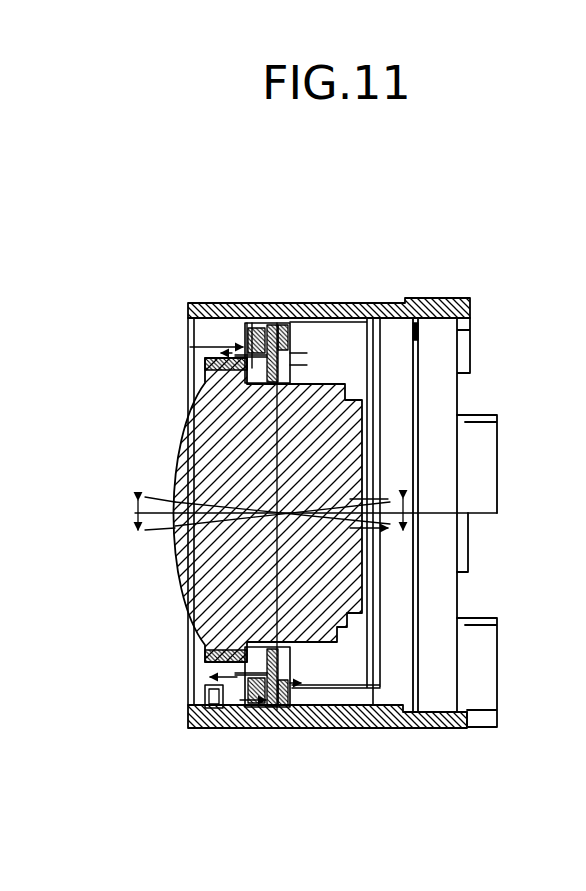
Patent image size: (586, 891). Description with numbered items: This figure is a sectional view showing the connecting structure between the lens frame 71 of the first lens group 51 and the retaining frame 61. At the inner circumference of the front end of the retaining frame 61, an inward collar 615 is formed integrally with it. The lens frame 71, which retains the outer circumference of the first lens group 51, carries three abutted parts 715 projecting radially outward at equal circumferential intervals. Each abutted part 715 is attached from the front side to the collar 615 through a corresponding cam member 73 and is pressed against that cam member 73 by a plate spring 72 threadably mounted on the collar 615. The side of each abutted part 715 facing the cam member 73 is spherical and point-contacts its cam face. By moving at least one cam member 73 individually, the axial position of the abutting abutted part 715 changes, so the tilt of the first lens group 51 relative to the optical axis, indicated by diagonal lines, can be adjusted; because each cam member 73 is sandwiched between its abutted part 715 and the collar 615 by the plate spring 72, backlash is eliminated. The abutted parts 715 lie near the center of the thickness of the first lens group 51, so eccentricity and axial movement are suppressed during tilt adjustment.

The first lens group 51 is at (197, 440).
The retaining frame 61 is at (355, 302).
The collar 615 is at (312, 302).
The lens frame 71 is at (205, 361).
The plate spring 72 is at (221, 340).
The cam member 73 is at (262, 322).
The abutted part 715 is at (250, 332).